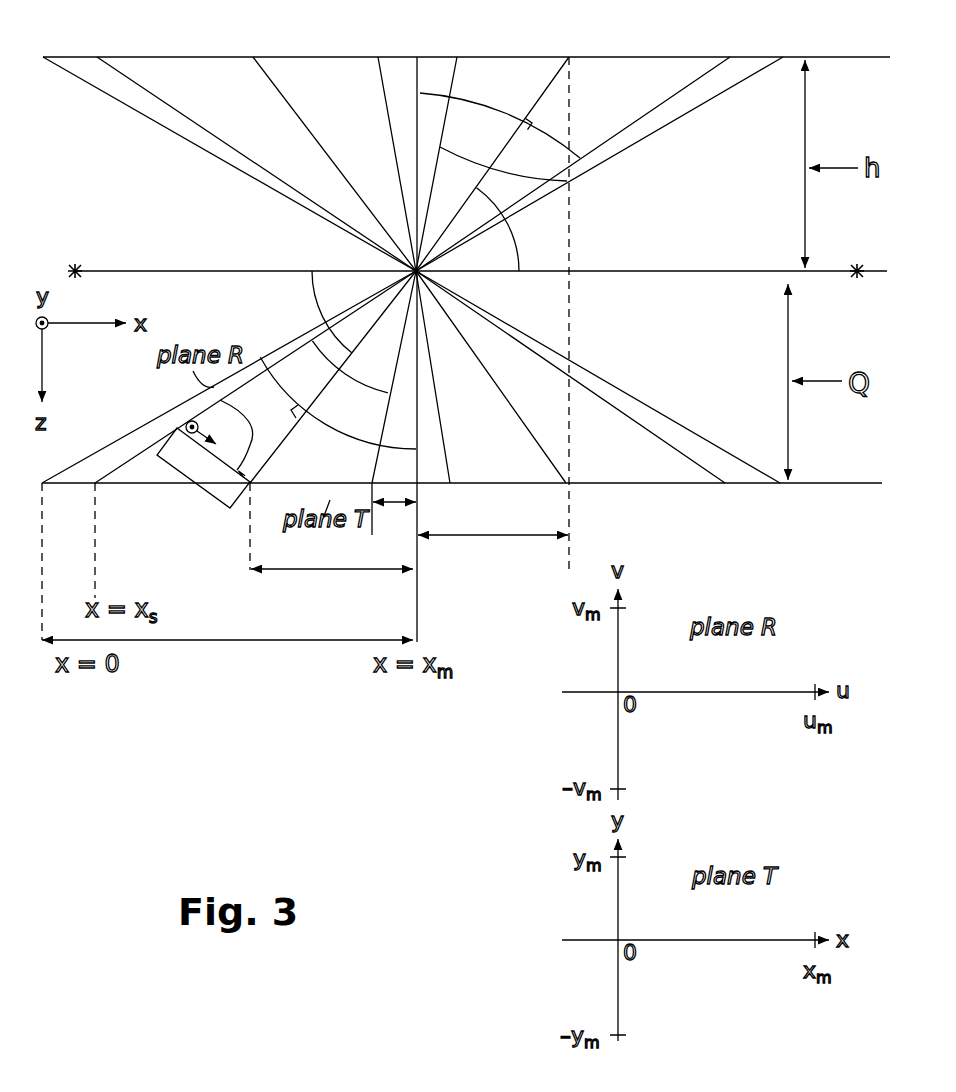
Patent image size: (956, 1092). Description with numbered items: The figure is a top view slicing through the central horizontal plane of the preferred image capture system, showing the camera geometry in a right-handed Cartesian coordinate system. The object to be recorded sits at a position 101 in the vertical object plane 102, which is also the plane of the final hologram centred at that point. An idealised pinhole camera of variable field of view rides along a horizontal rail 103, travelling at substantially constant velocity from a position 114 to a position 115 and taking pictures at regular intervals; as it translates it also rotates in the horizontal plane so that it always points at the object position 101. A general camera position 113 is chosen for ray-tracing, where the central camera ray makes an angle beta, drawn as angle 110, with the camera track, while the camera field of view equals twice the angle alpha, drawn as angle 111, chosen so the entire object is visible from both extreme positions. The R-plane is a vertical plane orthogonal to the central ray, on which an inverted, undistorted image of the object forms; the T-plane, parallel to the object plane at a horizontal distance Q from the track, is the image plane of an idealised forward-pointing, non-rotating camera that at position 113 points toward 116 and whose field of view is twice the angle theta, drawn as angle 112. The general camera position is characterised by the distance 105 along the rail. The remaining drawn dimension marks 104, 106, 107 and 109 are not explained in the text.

The object position 101 is at (567, 54).
The object plane 102 is at (814, 56).
The horizontal rail 103 is at (823, 268).
The bottom plane 104 is at (816, 480).
The camera position distance 105 is at (493, 314).
The horizontal distance of lower beam footprint 106 is at (331, 526).
The plane R target region 107 is at (173, 466).
The horizontal offset distance 109 is at (394, 509).
The angle beta 110 is at (315, 305).
The angle alpha 111 is at (477, 160).
The angle theta 112 is at (436, 92).
The general camera position 113 is at (421, 274).
The camera start position 114 is at (75, 265).
The camera end position 115 is at (861, 268).
The idealised camera pointing direction 116 is at (414, 54).